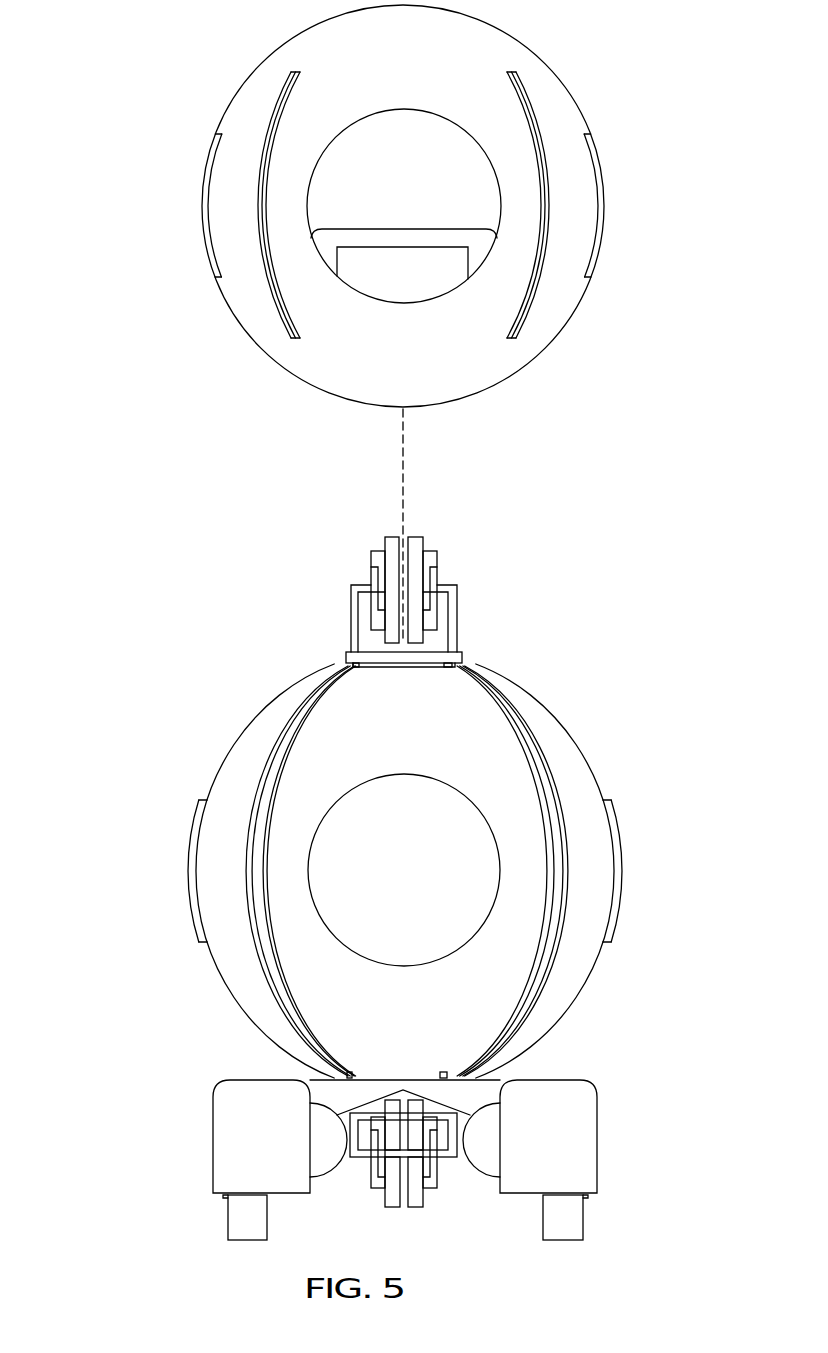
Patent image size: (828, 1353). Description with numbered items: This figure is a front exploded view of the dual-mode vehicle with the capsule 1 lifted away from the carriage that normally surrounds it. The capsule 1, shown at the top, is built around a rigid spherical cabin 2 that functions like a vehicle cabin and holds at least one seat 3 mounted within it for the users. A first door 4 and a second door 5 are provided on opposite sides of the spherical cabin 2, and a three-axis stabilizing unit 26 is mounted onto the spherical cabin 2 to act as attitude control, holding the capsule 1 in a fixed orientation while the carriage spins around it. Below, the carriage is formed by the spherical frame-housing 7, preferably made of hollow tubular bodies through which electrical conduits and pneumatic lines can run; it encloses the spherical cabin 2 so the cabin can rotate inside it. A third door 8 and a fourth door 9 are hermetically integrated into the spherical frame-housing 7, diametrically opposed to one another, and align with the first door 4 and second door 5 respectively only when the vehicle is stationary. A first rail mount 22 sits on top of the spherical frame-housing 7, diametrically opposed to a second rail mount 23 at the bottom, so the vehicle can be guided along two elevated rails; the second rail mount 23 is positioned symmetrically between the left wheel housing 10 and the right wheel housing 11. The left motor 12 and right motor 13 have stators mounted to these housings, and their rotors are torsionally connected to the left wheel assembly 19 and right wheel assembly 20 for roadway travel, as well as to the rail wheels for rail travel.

The capsule 1 is at (140, 152).
The spherical cabin 2 is at (353, 397).
The at least one seat 3 is at (432, 235).
The first door 4 is at (203, 209).
The second door 5 is at (601, 229).
The three-axis stabilizing unit 26 is at (296, 337).
The first rail mount 22 is at (359, 625).
The spherical frame-housing 7 is at (572, 740).
The third door 8 is at (190, 886).
The fourth door 9 is at (617, 872).
The left wheel housing 10 is at (598, 1150).
The right wheel housing 11 is at (221, 1138).
The left motor 12 is at (496, 1133).
The right motor 13 is at (314, 1133).
The second rail mount 23 is at (360, 1157).
The left wheel assembly 19 is at (568, 1237).
The right wheel assembly 20 is at (247, 1237).